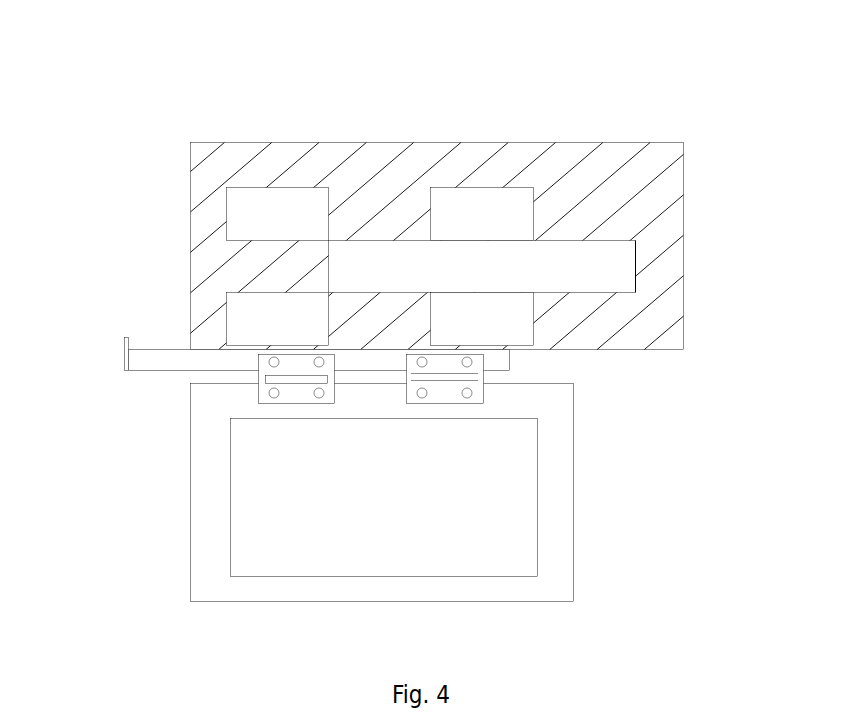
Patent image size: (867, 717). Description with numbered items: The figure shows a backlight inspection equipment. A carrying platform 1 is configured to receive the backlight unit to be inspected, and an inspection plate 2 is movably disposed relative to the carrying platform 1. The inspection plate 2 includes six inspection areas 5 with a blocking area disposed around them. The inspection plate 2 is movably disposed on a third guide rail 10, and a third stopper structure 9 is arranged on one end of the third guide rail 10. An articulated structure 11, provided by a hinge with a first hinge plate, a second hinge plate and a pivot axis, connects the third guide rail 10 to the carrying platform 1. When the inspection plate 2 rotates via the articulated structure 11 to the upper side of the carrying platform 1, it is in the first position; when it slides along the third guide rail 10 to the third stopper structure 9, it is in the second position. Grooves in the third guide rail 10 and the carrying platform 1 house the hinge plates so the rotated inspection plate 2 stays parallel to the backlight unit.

The carrying platform 1 is at (570, 559).
The inspection plate 2 is at (669, 186).
The inspection areas 5 is at (297, 310).
The third stopper structure 9 is at (123, 345).
The third guide rail 10 is at (173, 349).
The articulated structure 11 is at (480, 388).